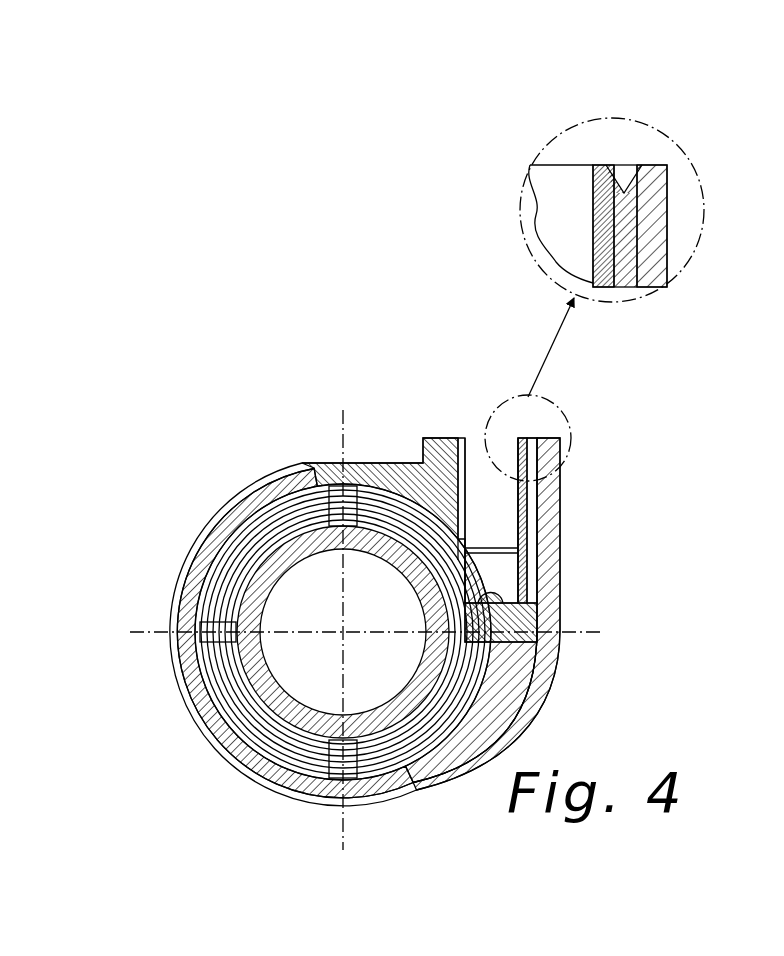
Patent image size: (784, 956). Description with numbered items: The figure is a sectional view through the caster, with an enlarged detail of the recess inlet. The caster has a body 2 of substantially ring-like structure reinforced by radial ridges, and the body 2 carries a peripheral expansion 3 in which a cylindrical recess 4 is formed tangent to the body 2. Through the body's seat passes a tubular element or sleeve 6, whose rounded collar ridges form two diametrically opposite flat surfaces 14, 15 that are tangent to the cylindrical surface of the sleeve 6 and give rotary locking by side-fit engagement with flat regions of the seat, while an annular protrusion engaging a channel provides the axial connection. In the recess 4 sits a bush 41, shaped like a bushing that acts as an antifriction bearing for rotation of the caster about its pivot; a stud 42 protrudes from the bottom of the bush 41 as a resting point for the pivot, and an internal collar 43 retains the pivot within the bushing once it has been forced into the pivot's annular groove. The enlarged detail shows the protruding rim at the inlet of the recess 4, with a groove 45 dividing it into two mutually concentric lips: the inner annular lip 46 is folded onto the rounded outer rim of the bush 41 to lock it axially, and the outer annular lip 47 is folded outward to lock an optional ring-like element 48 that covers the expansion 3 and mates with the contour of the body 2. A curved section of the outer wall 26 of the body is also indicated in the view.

The body 2 is at (264, 466).
The peripheral expansion 3 is at (534, 462).
The cylindrical recess 4 is at (478, 440).
The tubular element or sleeve 6 is at (391, 699).
The flat surface 14 is at (226, 628).
The flat surface 15 is at (540, 641).
The housing outer wall 26 is at (406, 803).
The bush 41 is at (536, 500).
The stud 42 is at (503, 592).
The internal collar 43 is at (522, 552).
The groove 45 is at (625, 186).
The inner annular lip 46 is at (610, 172).
The outer annular lip 47 is at (640, 170).
The ring-like element 48 is at (552, 533).